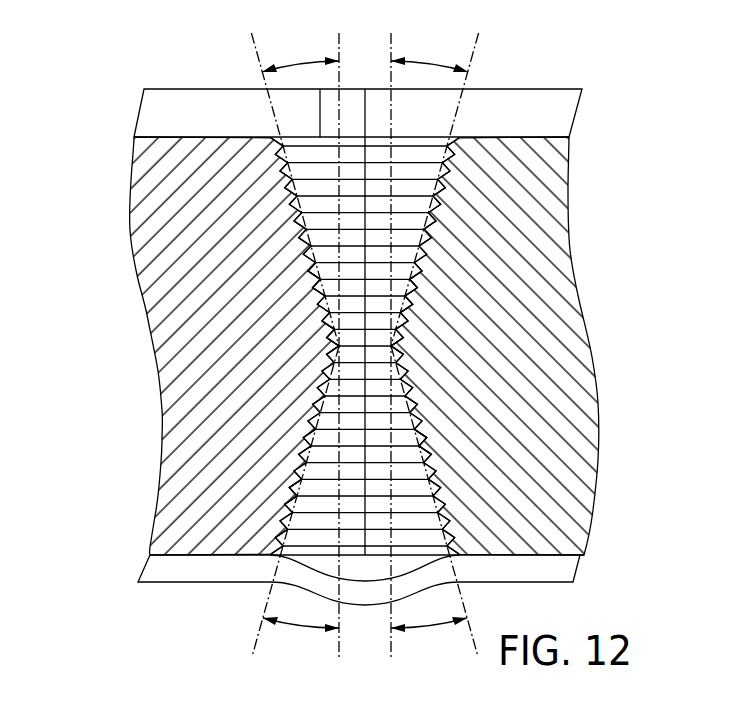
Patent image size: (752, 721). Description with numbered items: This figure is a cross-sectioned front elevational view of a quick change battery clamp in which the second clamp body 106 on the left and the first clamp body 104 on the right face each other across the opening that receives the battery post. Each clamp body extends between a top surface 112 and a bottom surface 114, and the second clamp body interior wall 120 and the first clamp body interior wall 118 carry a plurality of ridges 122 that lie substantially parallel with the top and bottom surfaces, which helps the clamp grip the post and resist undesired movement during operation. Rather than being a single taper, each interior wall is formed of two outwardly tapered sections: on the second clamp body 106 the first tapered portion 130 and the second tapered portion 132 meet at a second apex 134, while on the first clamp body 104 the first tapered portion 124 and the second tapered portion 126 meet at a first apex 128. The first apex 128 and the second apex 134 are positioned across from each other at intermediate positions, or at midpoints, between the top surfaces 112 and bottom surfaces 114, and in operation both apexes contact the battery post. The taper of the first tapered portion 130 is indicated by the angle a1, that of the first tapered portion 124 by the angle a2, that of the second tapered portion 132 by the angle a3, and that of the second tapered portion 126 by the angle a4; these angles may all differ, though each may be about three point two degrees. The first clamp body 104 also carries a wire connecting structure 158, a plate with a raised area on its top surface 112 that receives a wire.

The wire connecting structure 158 is at (146, 87).
The top surface 112 is at (208, 137).
The bottom surface 114 is at (208, 556).
The second clamp body 106 is at (133, 141).
The first clamp body 104 is at (572, 153).
The second clamp body interior wall 120 is at (304, 243).
The first clamp body interior wall 118 is at (423, 262).
The first tapered portion of the second clamp body 130 is at (297, 272).
The ridges 122 is at (337, 332).
The second apex 134 is at (337, 352).
The second tapered portion of the second clamp body 132 is at (276, 484).
The first tapered portion of the first clamp body 124 is at (430, 301).
The first apex 128 is at (391, 348).
The second tapered portion of the first clamp body 126 is at (435, 440).
The angle of the first tapered portion of the second clamp body a1 is at (300, 62).
The angle of the first tapered portion of the first clamp body a2 is at (430, 62).
The angle of the second tapered portion of the second clamp body a3 is at (300, 628).
The angle of the second tapered portion of the first clamp body a4 is at (430, 628).